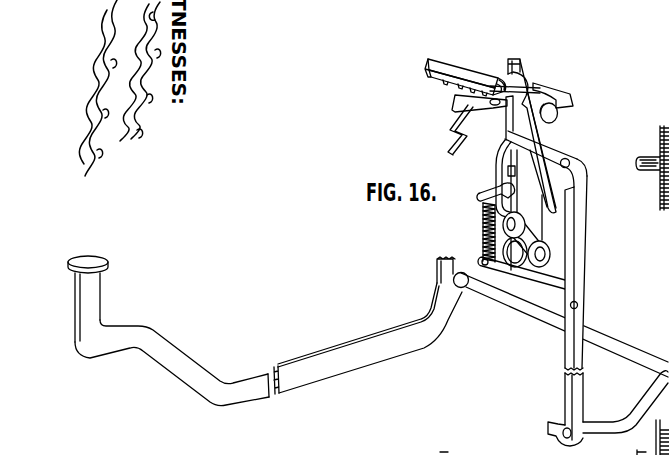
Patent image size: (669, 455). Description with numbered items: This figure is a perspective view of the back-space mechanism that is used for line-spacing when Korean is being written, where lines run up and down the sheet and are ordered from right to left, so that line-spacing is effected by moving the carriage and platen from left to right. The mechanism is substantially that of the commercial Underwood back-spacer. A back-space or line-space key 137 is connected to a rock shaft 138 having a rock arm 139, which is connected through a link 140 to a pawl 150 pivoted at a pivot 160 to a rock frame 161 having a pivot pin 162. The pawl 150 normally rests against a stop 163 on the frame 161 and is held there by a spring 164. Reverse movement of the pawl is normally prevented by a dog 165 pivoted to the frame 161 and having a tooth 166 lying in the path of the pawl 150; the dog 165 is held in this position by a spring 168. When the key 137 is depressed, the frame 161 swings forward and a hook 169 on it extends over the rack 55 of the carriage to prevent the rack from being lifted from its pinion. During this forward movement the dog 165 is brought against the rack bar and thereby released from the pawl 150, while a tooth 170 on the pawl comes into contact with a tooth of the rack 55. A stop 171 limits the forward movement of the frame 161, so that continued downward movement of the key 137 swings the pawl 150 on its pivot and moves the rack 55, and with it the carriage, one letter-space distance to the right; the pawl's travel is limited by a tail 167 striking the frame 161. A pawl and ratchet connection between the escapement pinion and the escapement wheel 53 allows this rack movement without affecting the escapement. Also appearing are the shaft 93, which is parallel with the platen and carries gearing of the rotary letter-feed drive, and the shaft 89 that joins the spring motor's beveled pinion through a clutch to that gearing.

The escapement wheel 53 is at (448, 150).
The rack 55 is at (443, 59).
The shaft 89 is at (448, 452).
The shaft 93 is at (642, 157).
The back-space or line-space key 137 is at (103, 260).
The rock shaft 138 is at (626, 346).
The rock arm 139 is at (628, 410).
The link 140 is at (584, 276).
The pawl 150 is at (540, 152).
The pivot 160 is at (505, 226).
The rock frame 161 is at (539, 229).
The pivot pin 162 is at (541, 259).
The stop 163 is at (508, 172).
The spring 164 is at (482, 207).
The dog 165 is at (531, 82).
The tooth 166 is at (523, 128).
The tail 167 is at (503, 256).
The spring 168 is at (586, 197).
The hook 169 is at (513, 57).
The tooth 170 is at (505, 110).
The stop 171 is at (569, 102).